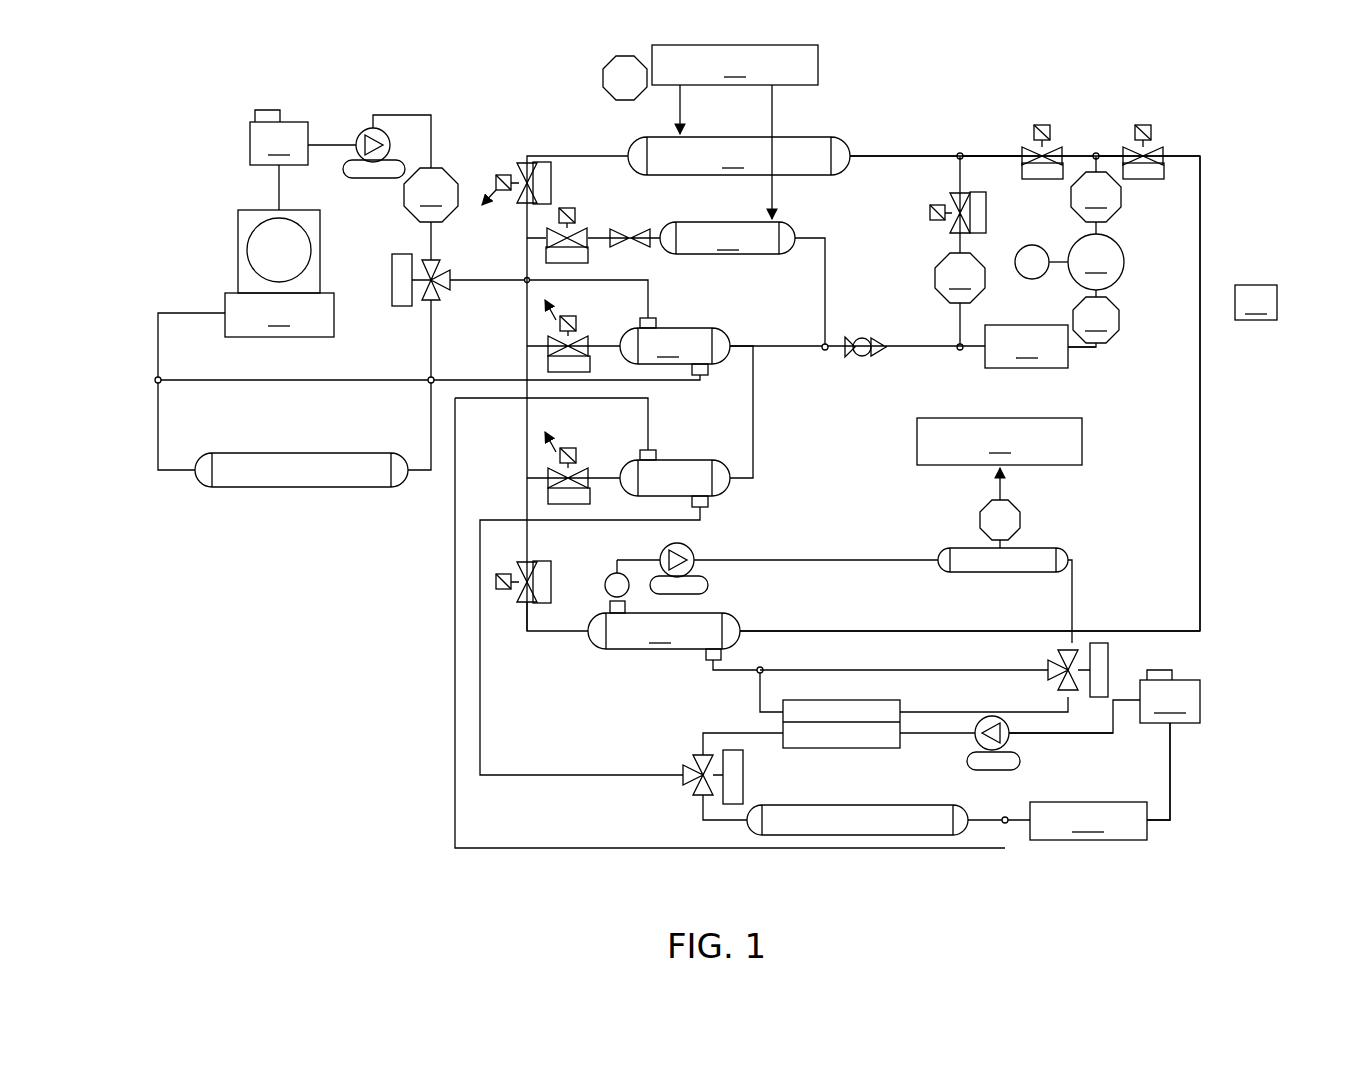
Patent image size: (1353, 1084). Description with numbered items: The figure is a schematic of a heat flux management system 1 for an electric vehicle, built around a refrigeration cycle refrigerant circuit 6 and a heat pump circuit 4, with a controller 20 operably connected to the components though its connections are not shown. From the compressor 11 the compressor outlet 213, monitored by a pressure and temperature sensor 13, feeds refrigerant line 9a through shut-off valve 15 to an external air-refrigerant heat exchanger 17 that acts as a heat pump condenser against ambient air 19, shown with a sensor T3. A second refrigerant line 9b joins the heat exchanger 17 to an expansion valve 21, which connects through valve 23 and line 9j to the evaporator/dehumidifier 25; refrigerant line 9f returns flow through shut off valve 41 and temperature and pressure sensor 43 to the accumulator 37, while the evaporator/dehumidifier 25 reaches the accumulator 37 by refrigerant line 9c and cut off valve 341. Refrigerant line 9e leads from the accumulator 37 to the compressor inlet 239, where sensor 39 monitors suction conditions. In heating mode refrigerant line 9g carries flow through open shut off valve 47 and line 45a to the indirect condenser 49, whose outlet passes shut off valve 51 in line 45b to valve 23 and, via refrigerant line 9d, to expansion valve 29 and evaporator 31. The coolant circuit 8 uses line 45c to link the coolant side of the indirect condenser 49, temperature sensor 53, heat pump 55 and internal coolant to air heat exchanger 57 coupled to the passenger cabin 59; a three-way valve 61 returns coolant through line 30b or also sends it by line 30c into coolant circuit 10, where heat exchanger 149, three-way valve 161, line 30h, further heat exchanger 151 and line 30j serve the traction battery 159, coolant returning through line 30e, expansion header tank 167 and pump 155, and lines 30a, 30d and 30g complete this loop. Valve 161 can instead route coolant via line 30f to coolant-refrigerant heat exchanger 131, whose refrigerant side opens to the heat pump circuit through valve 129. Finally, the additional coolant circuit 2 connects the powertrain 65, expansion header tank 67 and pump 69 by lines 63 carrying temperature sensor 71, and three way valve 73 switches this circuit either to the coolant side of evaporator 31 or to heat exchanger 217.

The heat flux management system 1 is at (1242, 137).
The additional coolant circuit 2 is at (205, 230).
The heat pump circuit 4 is at (1215, 608).
The refrigeration cycle refrigerant circuit 6 is at (900, 143).
The coolant circuit 8 is at (1085, 572).
The coolant circuit 10 is at (1187, 801).
The compressor 11 is at (1069, 262).
The pressure and temperature sensor 13 is at (1096, 189).
The shut-off valve 15 is at (1025, 165).
The external air-refrigerant heat exchanger 17 is at (739, 156).
The ambient air 19 is at (735, 132).
The controller 20 is at (1204, 303).
The expansion valve 21 is at (541, 162).
The shut-off valve 23 is at (592, 256).
The evaporator/dehumidifier 25 is at (727, 238).
The expansion valve 29 is at (545, 358).
The evaporator 31 is at (675, 346).
The accumulator 37 is at (1026, 346).
The temperature and pressure sensor 39 is at (1093, 322).
The shut off valve 41 is at (988, 215).
The temperature and pressure sensor 43 is at (960, 278).
The shut off valve 47 is at (1175, 178).
The indirect condenser 49 is at (664, 636).
The shut off valve 51 is at (555, 568).
The temperature sensor 53 is at (604, 589).
The heat pump 55 is at (712, 587).
The internal coolant to air heat exchanger 57 is at (960, 548).
The passenger cabin 59 is at (999, 441).
The three-way valve 61 is at (1110, 666).
The lines 63 is at (398, 112).
The powertrain 65 is at (279, 315).
The expansion header tank 67 is at (303, 137).
The pump 69 is at (378, 180).
The temperature sensor 71 is at (431, 214).
The three way valve 73 is at (401, 310).
The valve 129 is at (545, 494).
The coolant-refrigerant heat exchanger 131 is at (668, 460).
The heat exchanger 149 is at (840, 698).
The further heat exchanger 151 is at (858, 838).
The pump 155 is at (965, 762).
The second heat sink 159 is at (1088, 821).
The three-way valve 161 is at (745, 777).
The expansion header tank 167 is at (1104, 745).
The compressor outlet 213 is at (1100, 229).
The heat exchanger 217 is at (302, 490).
The compressor inlet 239 is at (1100, 299).
The cut off valve 341 is at (858, 360).
The refrigerant line 9a is at (1075, 143).
The second refrigerant line 9b is at (573, 140).
The refrigerant line 9c is at (840, 250).
The refrigerant line 9d is at (525, 266).
The refrigerant line 9e is at (1085, 360).
The refrigerant line 9f is at (945, 320).
The refrigerant line 9g is at (1100, 150).
The line 9j is at (630, 233).
The line section 30a is at (1082, 601).
The line 30b is at (930, 660).
The line 30c is at (950, 705).
The line section 30d is at (752, 692).
The line 30e is at (690, 745).
The line 30f is at (489, 750).
The line section 30g is at (447, 791).
The line 30h is at (690, 807).
The line 30j is at (1012, 830).
The refrigerant line 45a is at (1212, 471).
The refrigerant line 45b is at (540, 645).
The line 45c is at (820, 548).
The temperature sensor T3 is at (625, 78).